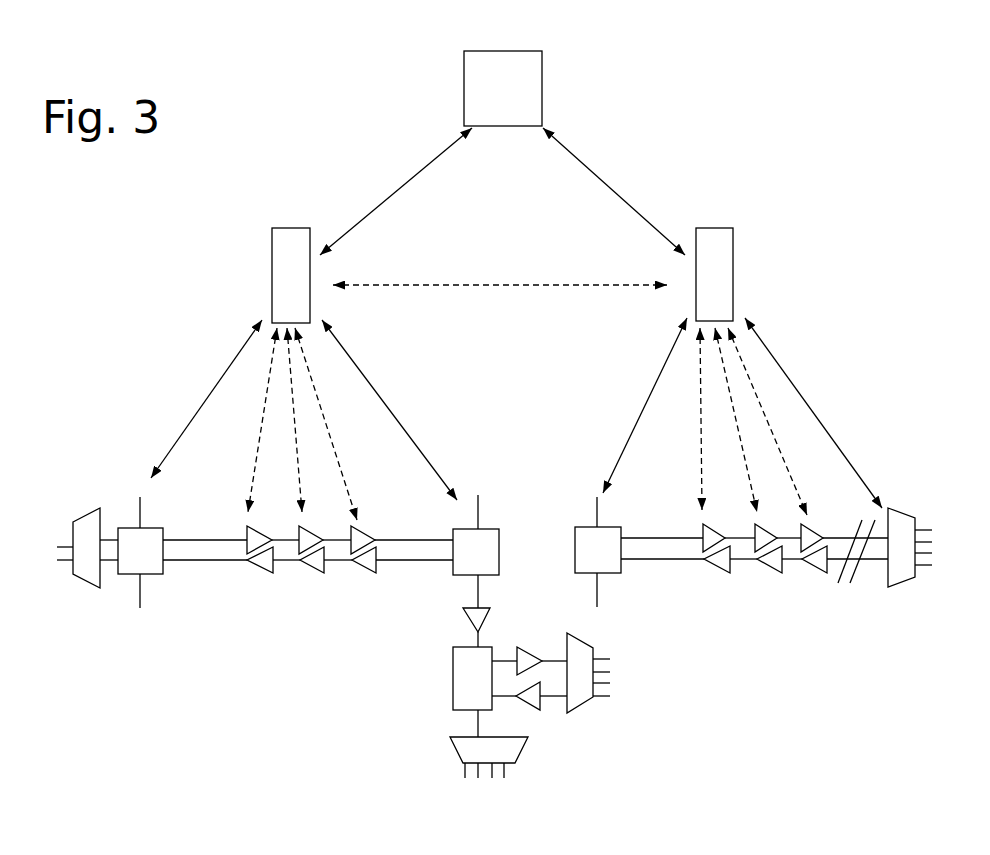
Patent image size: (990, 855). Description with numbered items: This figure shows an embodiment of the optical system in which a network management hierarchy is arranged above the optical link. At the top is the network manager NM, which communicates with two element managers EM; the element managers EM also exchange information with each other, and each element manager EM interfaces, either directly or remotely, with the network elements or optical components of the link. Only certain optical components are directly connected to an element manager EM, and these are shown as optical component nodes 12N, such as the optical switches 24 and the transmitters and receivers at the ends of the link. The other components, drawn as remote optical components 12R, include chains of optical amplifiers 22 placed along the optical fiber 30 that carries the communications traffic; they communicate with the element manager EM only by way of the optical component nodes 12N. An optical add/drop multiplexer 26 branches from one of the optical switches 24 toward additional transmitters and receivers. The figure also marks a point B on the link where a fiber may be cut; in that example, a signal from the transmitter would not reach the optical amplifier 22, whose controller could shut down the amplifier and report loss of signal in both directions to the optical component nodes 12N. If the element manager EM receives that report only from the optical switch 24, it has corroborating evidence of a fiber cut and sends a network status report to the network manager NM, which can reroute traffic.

The network manager NM is at (503, 70).
The element manager EM is at (499, 275).
The optical component nodes 12N is at (130, 482).
The remote optical components 12R is at (363, 570).
The optical amplifiers 22 is at (379, 519).
The optical switches 24 is at (162, 577).
The optical add/drop multiplexers 26 is at (453, 672).
The optical fiber 30 is at (202, 532).
The point of fiber cut B is at (856, 569).